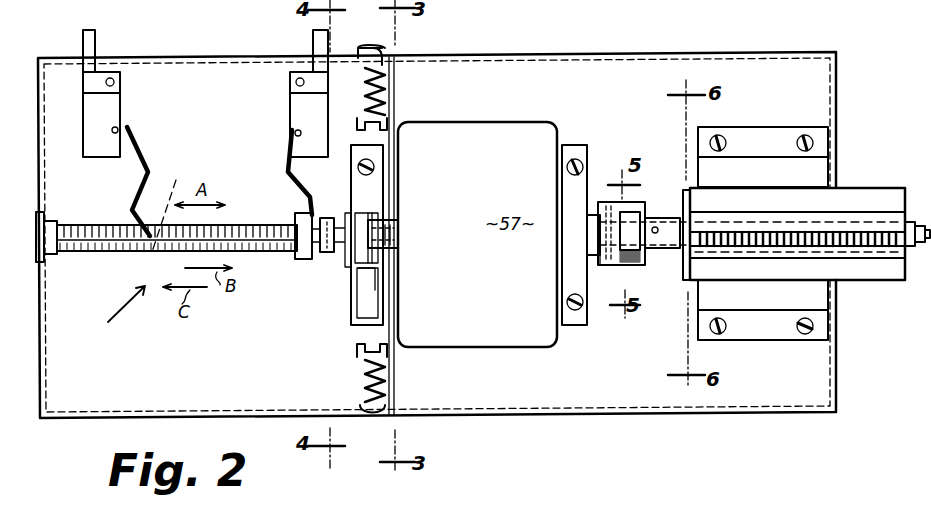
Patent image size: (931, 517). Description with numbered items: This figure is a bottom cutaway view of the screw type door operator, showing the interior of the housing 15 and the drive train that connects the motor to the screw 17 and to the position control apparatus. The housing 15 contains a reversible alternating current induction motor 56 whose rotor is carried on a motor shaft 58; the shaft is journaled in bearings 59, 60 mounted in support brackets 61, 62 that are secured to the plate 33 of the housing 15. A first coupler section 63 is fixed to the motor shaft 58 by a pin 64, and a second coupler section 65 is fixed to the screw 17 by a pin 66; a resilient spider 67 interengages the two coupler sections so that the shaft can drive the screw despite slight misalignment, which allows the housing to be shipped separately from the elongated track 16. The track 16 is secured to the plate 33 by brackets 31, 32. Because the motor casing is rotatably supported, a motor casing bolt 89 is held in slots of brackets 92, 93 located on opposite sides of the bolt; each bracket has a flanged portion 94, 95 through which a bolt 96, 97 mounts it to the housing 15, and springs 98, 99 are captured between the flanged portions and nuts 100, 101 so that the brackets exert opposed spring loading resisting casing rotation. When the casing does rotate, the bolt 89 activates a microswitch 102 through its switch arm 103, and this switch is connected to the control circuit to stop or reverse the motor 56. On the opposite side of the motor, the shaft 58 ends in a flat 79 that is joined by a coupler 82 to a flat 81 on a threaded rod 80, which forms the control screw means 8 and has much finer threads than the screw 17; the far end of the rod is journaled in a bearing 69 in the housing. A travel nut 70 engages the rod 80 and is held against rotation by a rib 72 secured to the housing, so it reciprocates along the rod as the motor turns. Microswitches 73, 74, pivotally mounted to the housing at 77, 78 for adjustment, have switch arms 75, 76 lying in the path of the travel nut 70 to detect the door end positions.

The control screw means 8 is at (118, 316).
The housing 15 is at (587, 47).
The track 16 is at (854, 192).
The screw 17 is at (890, 224).
The bracket 31 is at (785, 305).
The bracket 32 is at (768, 159).
The plate 33 is at (762, 397).
The alternating current induction motor 56 is at (479, 120).
The motor shaft 58 is at (396, 237).
The bearing 59 is at (372, 270).
The bearing 60 is at (590, 268).
The support bracket 61 is at (385, 160).
The support bracket 62 is at (590, 322).
The first coupler section 63 is at (622, 228).
The pin 64 is at (592, 208).
The second coupler section 65 is at (644, 208).
The pin 66 is at (657, 236).
The spider 67 is at (640, 262).
The bearing 69 is at (55, 220).
The travel nut 70 is at (298, 258).
The rib 72 is at (176, 201).
The microswitch 73 is at (298, 108).
The microswitch 74 is at (110, 108).
The switch arm 75 is at (290, 186).
The switch arm 76 is at (137, 188).
The pivot mounting 77 is at (294, 82).
The pivot mounting 78 is at (116, 80).
The flat 79 is at (333, 254).
The threaded rod 80 is at (96, 256).
The flat 81 is at (285, 258).
The coupler 82 is at (340, 256).
The motor casing bolt 89 is at (400, 226).
The bracket 92 is at (395, 98).
The bracket 93 is at (396, 385).
The flanged portion 94 is at (345, 68).
The flanged portion 95 is at (365, 402).
The bolt 96 is at (395, 140).
The bolt 97 is at (380, 328).
The spring 98 is at (366, 77).
The spring 99 is at (362, 378).
The nut 100 is at (395, 118).
The nut 101 is at (395, 350).
The microswitch 102 is at (372, 284).
The switch arm 103 is at (382, 205).